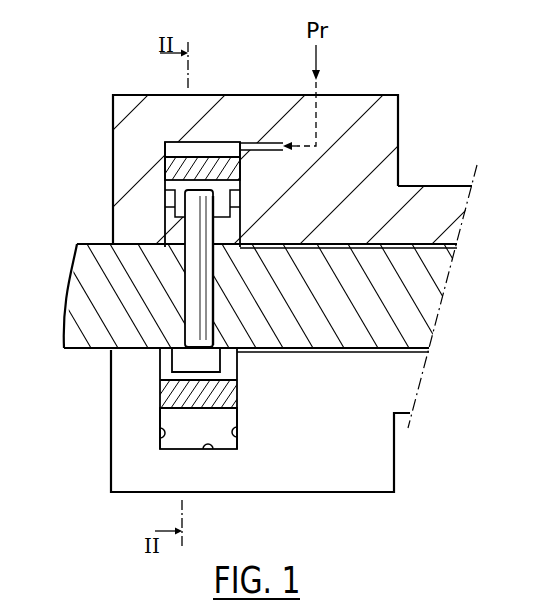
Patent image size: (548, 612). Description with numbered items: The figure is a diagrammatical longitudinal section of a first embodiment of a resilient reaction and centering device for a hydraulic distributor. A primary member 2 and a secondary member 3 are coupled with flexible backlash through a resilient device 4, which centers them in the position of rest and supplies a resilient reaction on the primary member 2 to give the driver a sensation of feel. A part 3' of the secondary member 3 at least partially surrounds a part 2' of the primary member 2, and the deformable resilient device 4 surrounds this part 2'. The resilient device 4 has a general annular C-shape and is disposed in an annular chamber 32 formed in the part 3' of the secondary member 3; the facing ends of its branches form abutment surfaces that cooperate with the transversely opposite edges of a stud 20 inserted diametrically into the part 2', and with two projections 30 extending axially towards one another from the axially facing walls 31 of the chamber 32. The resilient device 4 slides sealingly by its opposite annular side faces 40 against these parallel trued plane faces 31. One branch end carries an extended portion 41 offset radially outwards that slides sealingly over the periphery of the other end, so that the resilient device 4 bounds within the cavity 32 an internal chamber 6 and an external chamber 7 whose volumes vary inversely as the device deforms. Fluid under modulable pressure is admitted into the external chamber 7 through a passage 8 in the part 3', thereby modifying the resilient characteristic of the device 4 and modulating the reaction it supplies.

The primary member 2 is at (264, 296).
The part of the primary member 2' is at (333, 312).
The secondary member 3 is at (437, 272).
The part of the secondary member 3' is at (274, 150).
The resilient device 4 is at (237, 390).
The internal chamber 6 is at (163, 363).
The external chamber 7 is at (206, 436).
The passage 8 is at (270, 142).
The stud 20 is at (187, 315).
The projections 30 is at (170, 197).
The axially facing walls 31 is at (237, 443).
The annular chamber 32 is at (208, 450).
The annular side faces 40 is at (163, 163).
The extended portion 41 is at (207, 155).